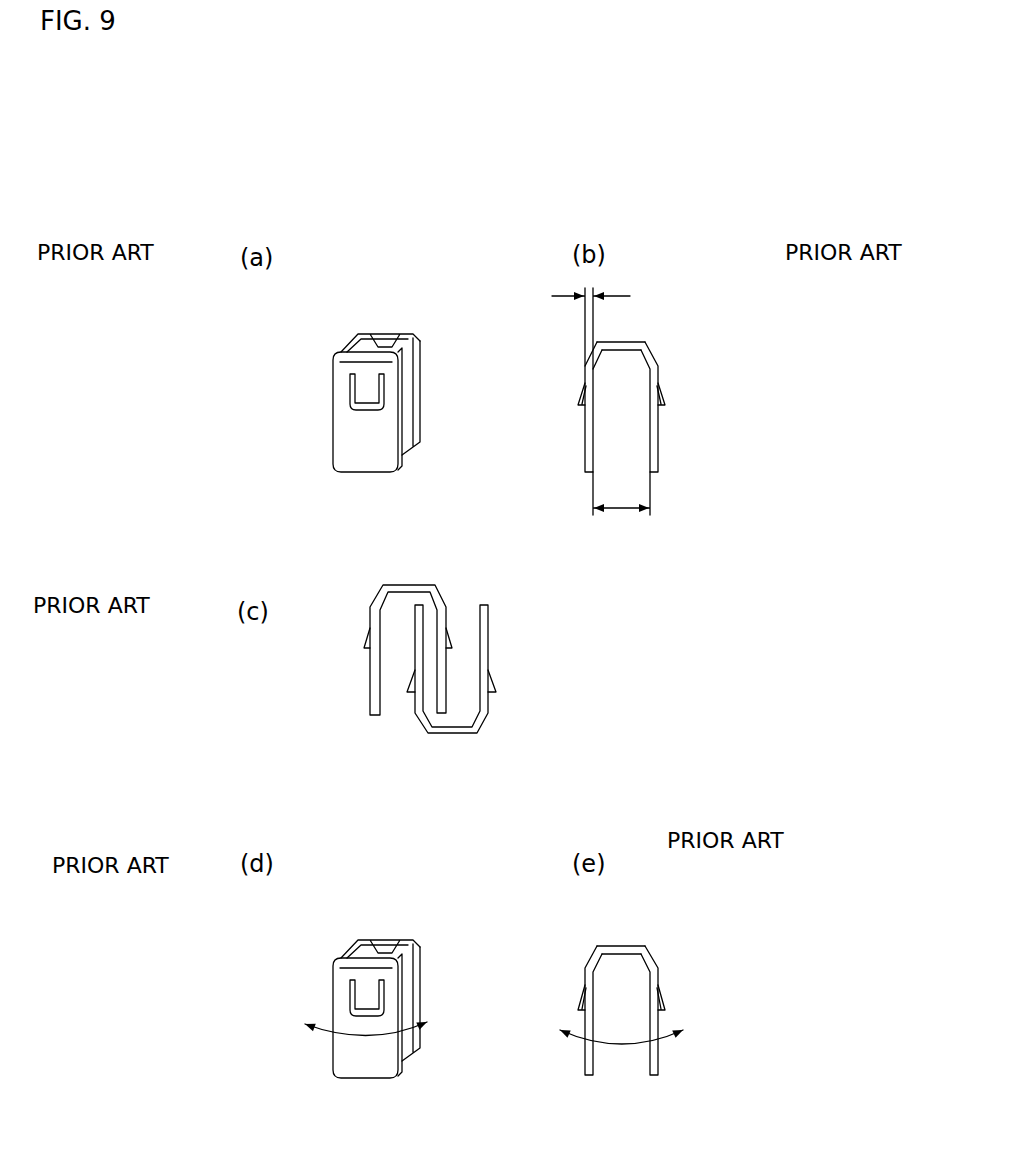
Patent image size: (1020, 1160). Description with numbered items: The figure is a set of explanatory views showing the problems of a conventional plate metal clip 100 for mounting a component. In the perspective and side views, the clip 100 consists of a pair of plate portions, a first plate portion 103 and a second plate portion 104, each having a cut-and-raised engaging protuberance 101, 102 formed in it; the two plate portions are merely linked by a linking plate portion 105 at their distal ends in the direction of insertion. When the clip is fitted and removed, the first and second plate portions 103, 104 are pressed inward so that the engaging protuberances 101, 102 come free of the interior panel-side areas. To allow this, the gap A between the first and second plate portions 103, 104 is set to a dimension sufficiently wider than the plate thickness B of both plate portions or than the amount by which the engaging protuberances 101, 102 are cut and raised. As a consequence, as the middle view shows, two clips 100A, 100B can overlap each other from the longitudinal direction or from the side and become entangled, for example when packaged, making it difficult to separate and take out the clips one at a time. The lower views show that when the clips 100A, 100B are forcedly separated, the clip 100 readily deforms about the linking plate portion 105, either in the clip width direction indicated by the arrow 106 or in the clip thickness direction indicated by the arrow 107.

The plate metal clip 100 is at (505, 675).
The clip 100A is at (366, 685).
The clip 100B is at (500, 660).
The engaging protuberance 101 is at (358, 392).
The engaging protuberance 102 is at (665, 398).
The first plate portion 103 is at (348, 441).
The second plate portion 104 is at (420, 402).
The linking plate portion 105 is at (378, 336).
The arrow 106 is at (322, 1025).
The arrow 107 is at (663, 1030).
The gap A is at (621, 493).
The plate thickness B is at (591, 320).